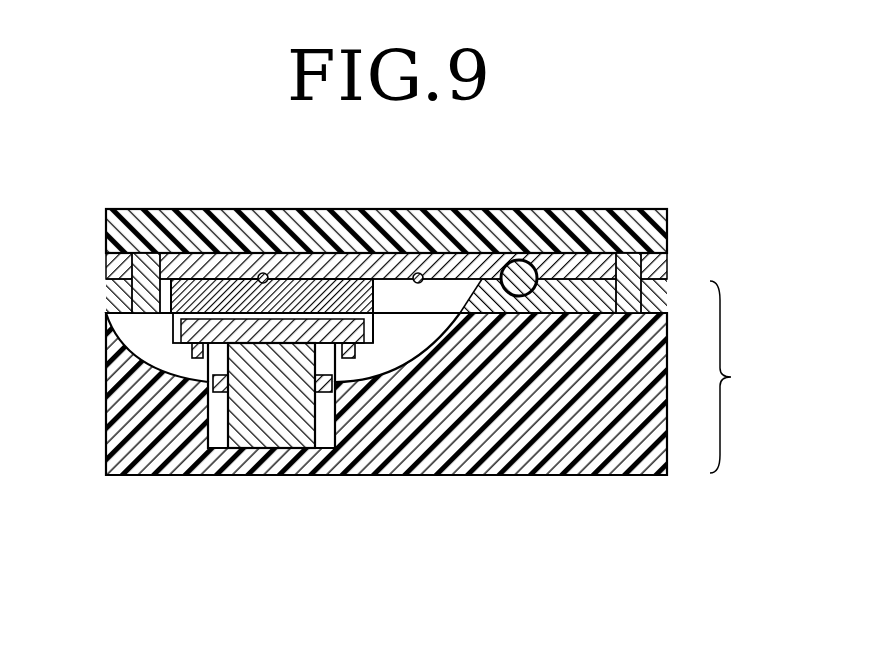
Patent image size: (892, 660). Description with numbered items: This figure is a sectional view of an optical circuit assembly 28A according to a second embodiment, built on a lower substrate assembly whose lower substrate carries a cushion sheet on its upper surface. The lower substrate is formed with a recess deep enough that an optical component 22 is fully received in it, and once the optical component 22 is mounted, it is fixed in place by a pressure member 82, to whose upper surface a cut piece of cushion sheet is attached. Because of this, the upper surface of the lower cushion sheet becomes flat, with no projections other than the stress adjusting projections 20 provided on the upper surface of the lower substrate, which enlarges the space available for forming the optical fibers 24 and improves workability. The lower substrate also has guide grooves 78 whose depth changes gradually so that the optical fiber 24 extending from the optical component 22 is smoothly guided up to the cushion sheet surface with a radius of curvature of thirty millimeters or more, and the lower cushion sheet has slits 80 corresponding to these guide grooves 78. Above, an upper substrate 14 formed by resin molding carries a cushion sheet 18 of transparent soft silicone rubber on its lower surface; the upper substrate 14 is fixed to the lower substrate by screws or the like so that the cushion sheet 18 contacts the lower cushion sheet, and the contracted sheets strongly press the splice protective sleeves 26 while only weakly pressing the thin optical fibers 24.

The upper substrate 14 is at (106, 227).
The cushion sheet 18 is at (106, 264).
The stress adjusting projection 20 is at (640, 296).
The optical component 22 is at (268, 428).
The optical fiber 24 is at (263, 273).
The splice protective sleeve 26 is at (521, 261).
The optical circuit assembly 28A is at (614, 203).
The guide groove 78 is at (173, 362).
The slit 80 is at (390, 292).
The pressure member 82 is at (188, 332).